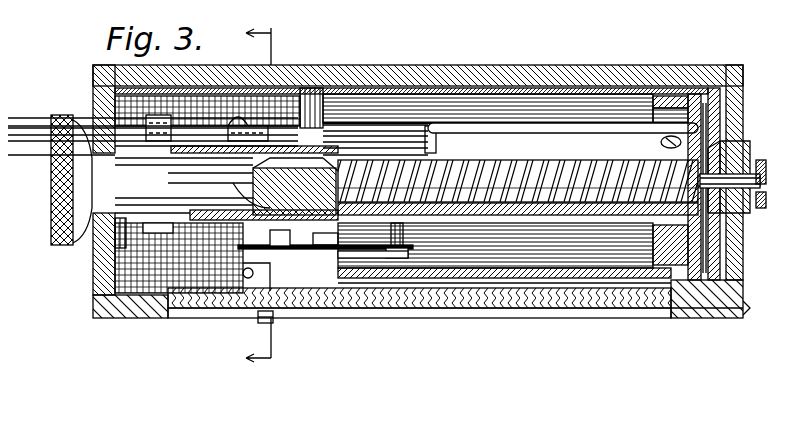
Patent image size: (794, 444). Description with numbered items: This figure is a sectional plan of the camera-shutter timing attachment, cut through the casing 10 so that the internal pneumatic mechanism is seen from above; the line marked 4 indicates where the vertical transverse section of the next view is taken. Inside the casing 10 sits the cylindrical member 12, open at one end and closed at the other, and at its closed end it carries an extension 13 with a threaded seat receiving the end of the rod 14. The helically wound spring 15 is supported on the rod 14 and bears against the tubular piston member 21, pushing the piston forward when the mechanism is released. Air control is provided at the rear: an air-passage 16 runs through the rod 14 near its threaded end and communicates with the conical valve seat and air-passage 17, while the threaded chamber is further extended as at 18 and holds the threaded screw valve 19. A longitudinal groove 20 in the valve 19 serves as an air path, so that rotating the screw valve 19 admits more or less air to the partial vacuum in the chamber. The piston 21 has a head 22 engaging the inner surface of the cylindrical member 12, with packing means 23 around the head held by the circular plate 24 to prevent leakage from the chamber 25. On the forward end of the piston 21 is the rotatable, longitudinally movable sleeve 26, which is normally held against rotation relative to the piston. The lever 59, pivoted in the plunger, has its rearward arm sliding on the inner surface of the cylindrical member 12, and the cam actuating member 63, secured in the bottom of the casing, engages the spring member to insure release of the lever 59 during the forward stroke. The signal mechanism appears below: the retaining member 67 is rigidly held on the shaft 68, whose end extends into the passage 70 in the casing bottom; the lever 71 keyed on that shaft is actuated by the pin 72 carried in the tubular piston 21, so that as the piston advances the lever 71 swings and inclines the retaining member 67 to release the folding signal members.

The section line 4- 4 is at (267, 196).
The casing 10 is at (453, 47).
The cylindrical member 12 is at (578, 80).
The extension 13 is at (714, 138).
The rod 14 is at (722, 150).
The helically wound spring 15 is at (545, 130).
The air-passage 16 is at (655, 147).
The conical valve seat and air-passage 17 is at (737, 150).
The extended portion of threaded chamber 18 is at (742, 190).
The threaded screw valve 19 is at (758, 174).
The longitudinal groove 20 is at (726, 163).
The tubular piston member 21 is at (562, 160).
The head 22 is at (424, 325).
The packing means 23 is at (707, 311).
The circular plate 24 is at (708, 305).
The chamber 25 is at (737, 305).
The sleeve 26 is at (183, 230).
The lever 59 is at (290, 120).
The cam actuating member 63 is at (66, 115).
The retaining member 67 is at (270, 305).
The shaft 68 is at (300, 243).
The passage 70 is at (320, 237).
The lever 71 is at (390, 252).
The pin 72 is at (395, 258).